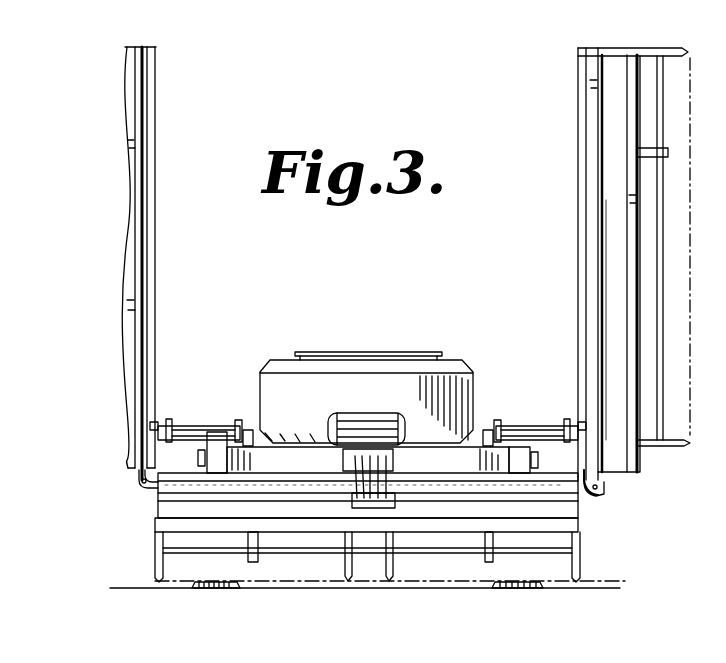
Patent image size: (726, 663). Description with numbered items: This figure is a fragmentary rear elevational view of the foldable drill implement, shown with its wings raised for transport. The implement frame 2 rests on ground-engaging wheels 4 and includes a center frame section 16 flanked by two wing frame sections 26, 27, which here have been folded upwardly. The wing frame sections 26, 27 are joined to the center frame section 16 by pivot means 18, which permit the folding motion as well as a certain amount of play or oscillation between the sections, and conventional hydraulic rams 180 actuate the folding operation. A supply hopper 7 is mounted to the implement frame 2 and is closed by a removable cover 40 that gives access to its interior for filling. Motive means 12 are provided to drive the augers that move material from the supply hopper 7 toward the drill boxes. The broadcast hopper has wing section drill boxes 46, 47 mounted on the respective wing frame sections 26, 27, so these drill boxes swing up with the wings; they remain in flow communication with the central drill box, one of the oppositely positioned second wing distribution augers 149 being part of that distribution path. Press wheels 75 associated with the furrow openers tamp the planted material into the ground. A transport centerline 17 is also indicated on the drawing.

The implement frame 2 is at (529, 461).
The ground-engaging wheels 4 is at (520, 592).
The supply hopper 7 is at (474, 387).
The motive means 12 is at (404, 466).
The center frame section 16 is at (553, 500).
The vehicle centerline 17 is at (712, 240).
The pivot means 18 is at (631, 527).
The wing frame section 26 is at (148, 127).
The wing frame section 27 is at (598, 172).
The cover 40 is at (332, 351).
The wing section drill box 46 is at (128, 283).
The wing section drill box 47 is at (606, 296).
The press wheel 75 is at (685, 447).
The second wing distribution auger 149 is at (600, 495).
The hydraulic rams 180 is at (183, 426).